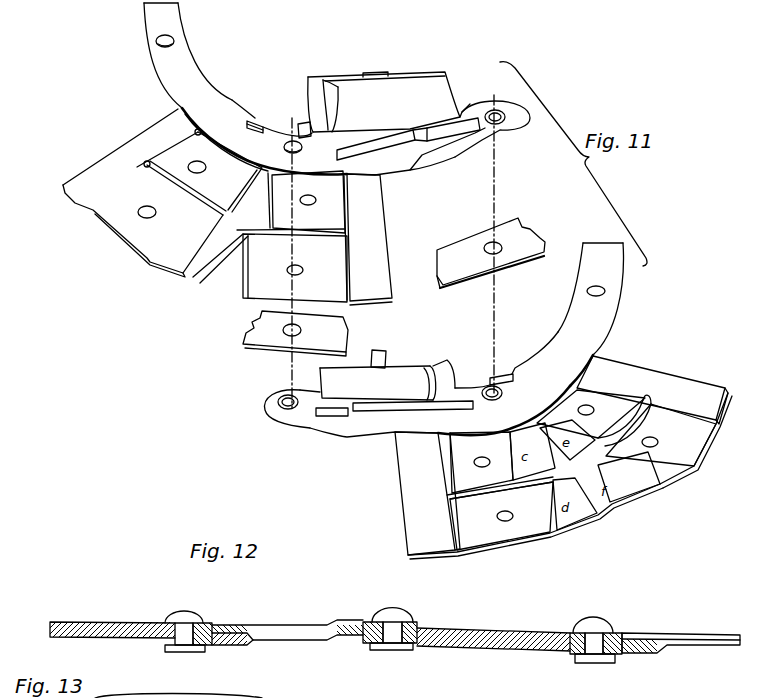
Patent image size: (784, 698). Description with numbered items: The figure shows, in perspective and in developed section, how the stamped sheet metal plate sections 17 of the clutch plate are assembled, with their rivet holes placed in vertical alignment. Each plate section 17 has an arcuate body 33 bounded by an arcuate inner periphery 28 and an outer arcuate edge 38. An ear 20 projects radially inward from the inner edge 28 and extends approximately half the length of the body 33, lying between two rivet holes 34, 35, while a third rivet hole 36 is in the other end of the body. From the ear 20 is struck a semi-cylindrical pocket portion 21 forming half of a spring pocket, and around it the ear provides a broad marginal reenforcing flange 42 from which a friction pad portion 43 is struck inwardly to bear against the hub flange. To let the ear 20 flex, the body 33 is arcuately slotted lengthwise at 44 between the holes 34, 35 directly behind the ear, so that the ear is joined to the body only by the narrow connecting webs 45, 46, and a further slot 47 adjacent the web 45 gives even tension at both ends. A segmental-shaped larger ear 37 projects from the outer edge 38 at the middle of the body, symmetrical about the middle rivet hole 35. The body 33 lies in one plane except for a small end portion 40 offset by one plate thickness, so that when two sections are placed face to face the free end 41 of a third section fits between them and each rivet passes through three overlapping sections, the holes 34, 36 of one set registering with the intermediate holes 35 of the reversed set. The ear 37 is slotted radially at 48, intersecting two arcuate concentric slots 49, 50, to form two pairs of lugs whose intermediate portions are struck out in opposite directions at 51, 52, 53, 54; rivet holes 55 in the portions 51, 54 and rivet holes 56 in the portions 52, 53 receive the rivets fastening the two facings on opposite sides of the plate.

In FIG. 11, the plate section 17 is at (212, 75).
In FIG. 12, the plate section 17 is at (610, 332).
In FIG. 11, the ear 20 is at (448, 71).
In FIG. 12, the ear 20 is at (447, 363).
In FIG. 11, the struck out or embossed pocket portion 21 is at (361, 80).
In FIG. 12, the struck out or embossed pocket portion 21 is at (318, 374).
In FIG. 11, the arcuate inner periphery 28 is at (244, 106).
In FIG. 12, the arcuate inner periphery 28 is at (541, 341).
In FIG. 11, the arcuate body 33 is at (180, 97).
In FIG. 12, the arcuate body 33 is at (579, 358).
In FIG. 11, the rivet hole 34 is at (504, 127).
In FIG. 12, the rivet hole 34 is at (281, 407).
In FIG. 11, the middle rivet hole 35 is at (301, 151).
In FIG. 12, the middle rivet hole 35 is at (489, 389).
In FIG. 11, the third rivet hole 36 is at (176, 40).
In FIG. 12, the third rivet hole 36 is at (608, 291).
In FIG. 11, the segmental-shaped larger ear 37 is at (374, 216).
In FIG. 12, the segmental-shaped larger ear 37 is at (670, 377).
In FIG. 11, the outer arcuate edge 38 is at (406, 172).
In FIG. 11, the small end portion 40 is at (452, 162).
In FIG. 11, the free end 41 is at (152, 17).
In FIG. 11, the marginal reenforcing flange 42 is at (309, 80).
In FIG. 12, the marginal reenforcing flange 42 is at (426, 362).
In FIG. 11, the friction pad portion 43 is at (386, 71).
In FIG. 12, the friction pad portion 43 is at (379, 354).
In FIG. 11, the arcuate slot 44 is at (372, 148).
In FIG. 12, the arcuate slot 44 is at (385, 412).
In FIG. 11, the connecting web 45 is at (306, 124).
In FIG. 12, the connecting web 45 is at (426, 386).
In FIG. 11, the connecting web 46 is at (464, 112).
In FIG. 12, the connecting web 46 is at (310, 401).
In FIG. 11, the slot 47 is at (256, 127).
In FIG. 12, the slot 47 is at (515, 377).
In FIG. 12, the radial slot 48 is at (612, 512).
In FIG. 12, the arcuate concentric slot 49 is at (516, 402).
In FIG. 12, the arcuate concentric slot 50 is at (616, 441).
In FIG. 12, the struck out portion 51 is at (462, 453).
In FIG. 12, the struck out portion 52 is at (489, 547).
In FIG. 12, the struck out portion 53 is at (644, 396).
In FIG. 12, the struck out portion 54 is at (692, 452).
In FIG. 12, the rivet hole 55 is at (653, 443).
In FIG. 12, the rivet hole 56 is at (590, 405).